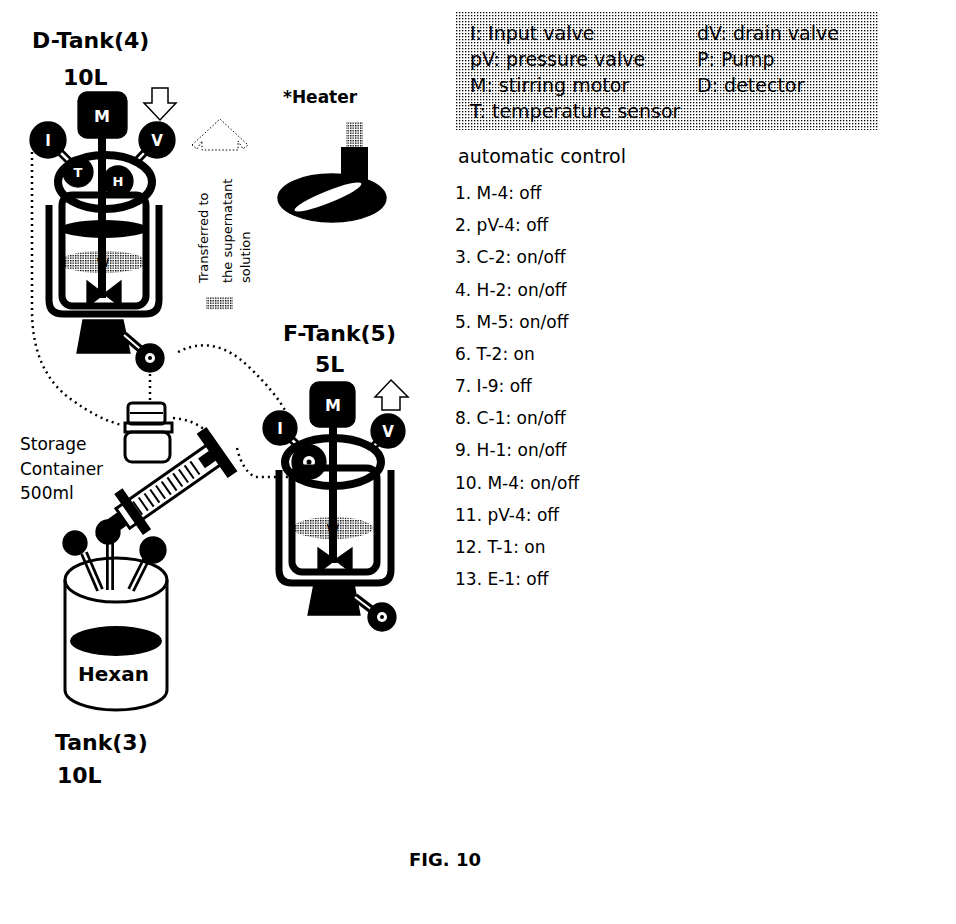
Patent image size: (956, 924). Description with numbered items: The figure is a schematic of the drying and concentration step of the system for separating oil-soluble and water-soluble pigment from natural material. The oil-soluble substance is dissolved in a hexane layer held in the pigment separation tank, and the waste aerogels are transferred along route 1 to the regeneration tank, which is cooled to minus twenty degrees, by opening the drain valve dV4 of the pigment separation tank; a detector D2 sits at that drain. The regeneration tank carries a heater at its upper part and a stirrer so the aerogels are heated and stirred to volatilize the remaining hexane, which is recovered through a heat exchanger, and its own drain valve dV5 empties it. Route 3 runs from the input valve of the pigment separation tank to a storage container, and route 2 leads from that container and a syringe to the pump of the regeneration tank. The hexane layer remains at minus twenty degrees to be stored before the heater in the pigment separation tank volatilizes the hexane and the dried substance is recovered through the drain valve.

The transfer route 1 (supernatant from D-Tank(4) to F-Tank(5)) 1 is at (232, 378).
The transfer route 2 (storage container/syringe to F-Tank(5) pump) 2 is at (232, 468).
The transfer route 3 (D-Tank(4) input valve to storage container) 3 is at (77, 288).
The detector 2 D2 is at (145, 346).
The drain valve of the pigment separation tank dV4 is at (103, 350).
The drain valve of the regeneration tank dV5 is at (334, 617).